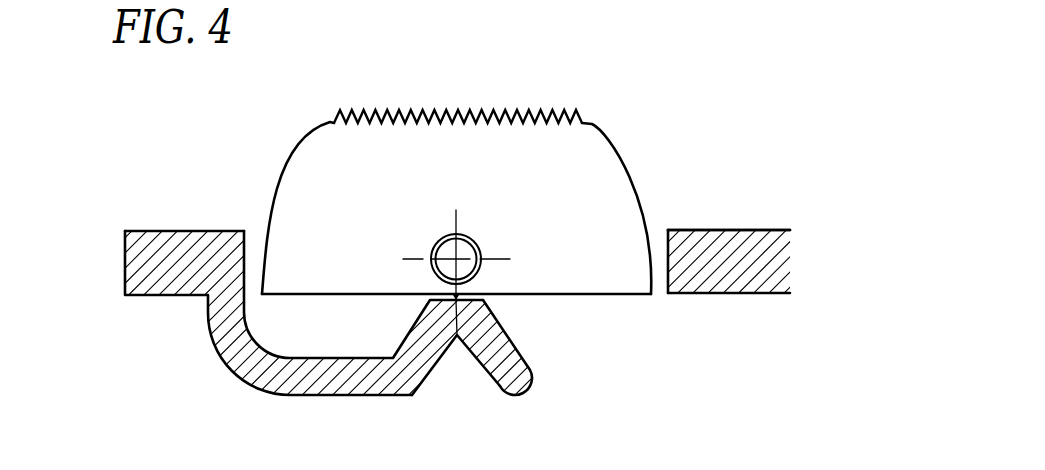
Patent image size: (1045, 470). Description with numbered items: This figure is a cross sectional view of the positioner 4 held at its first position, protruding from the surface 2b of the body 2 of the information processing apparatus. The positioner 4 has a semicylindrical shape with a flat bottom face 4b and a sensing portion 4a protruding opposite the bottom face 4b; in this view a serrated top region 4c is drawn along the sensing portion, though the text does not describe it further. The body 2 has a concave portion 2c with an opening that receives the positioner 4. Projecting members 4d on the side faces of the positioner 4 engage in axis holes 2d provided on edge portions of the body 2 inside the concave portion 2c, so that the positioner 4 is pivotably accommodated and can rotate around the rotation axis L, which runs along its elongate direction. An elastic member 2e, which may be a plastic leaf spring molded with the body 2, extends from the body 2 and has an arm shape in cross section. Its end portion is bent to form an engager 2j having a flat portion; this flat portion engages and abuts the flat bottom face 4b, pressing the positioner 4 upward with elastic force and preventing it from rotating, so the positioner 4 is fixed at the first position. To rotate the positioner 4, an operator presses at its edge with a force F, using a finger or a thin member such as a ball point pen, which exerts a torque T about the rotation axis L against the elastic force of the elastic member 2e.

The body 2 is at (764, 220).
The surface 2b is at (155, 245).
The concave portion 2c is at (658, 233).
The axis holes 2d is at (440, 248).
The elastic member 2e is at (530, 377).
The engager 2j is at (457, 337).
The positioner 4 is at (386, 102).
The sensing portion 4a is at (596, 122).
The bottom face 4b is at (617, 297).
The serrated top surface of cap 4c is at (502, 110).
The projecting members 4d is at (432, 250).
The force F is at (343, 103).
The torque T is at (389, 274).
The rotation axis L is at (456, 260).